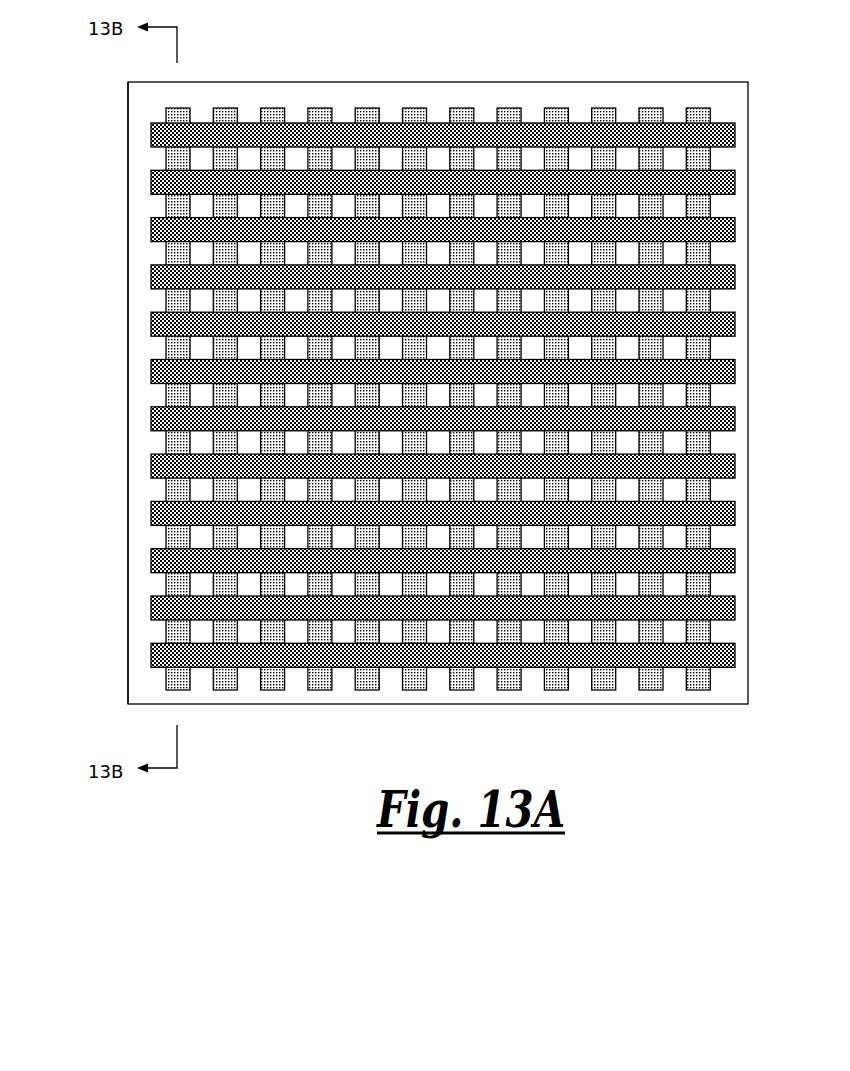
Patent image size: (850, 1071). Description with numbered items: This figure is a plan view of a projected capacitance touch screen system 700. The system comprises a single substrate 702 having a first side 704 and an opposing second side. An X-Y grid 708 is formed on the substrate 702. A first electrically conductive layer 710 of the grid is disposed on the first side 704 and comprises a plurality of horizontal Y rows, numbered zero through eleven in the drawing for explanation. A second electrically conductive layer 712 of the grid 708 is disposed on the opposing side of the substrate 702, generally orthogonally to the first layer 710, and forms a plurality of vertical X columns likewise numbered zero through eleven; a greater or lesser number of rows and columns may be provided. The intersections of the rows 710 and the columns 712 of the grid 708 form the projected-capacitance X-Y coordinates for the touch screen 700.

The touch screen system 700 is at (432, 354).
The substrate 702 is at (128, 158).
The first side 704 is at (738, 685).
The X-Y grid 708 is at (484, 357).
The first electrically conductive layer 710 is at (155, 463).
The second electrically conductive layer 712 is at (462, 114).